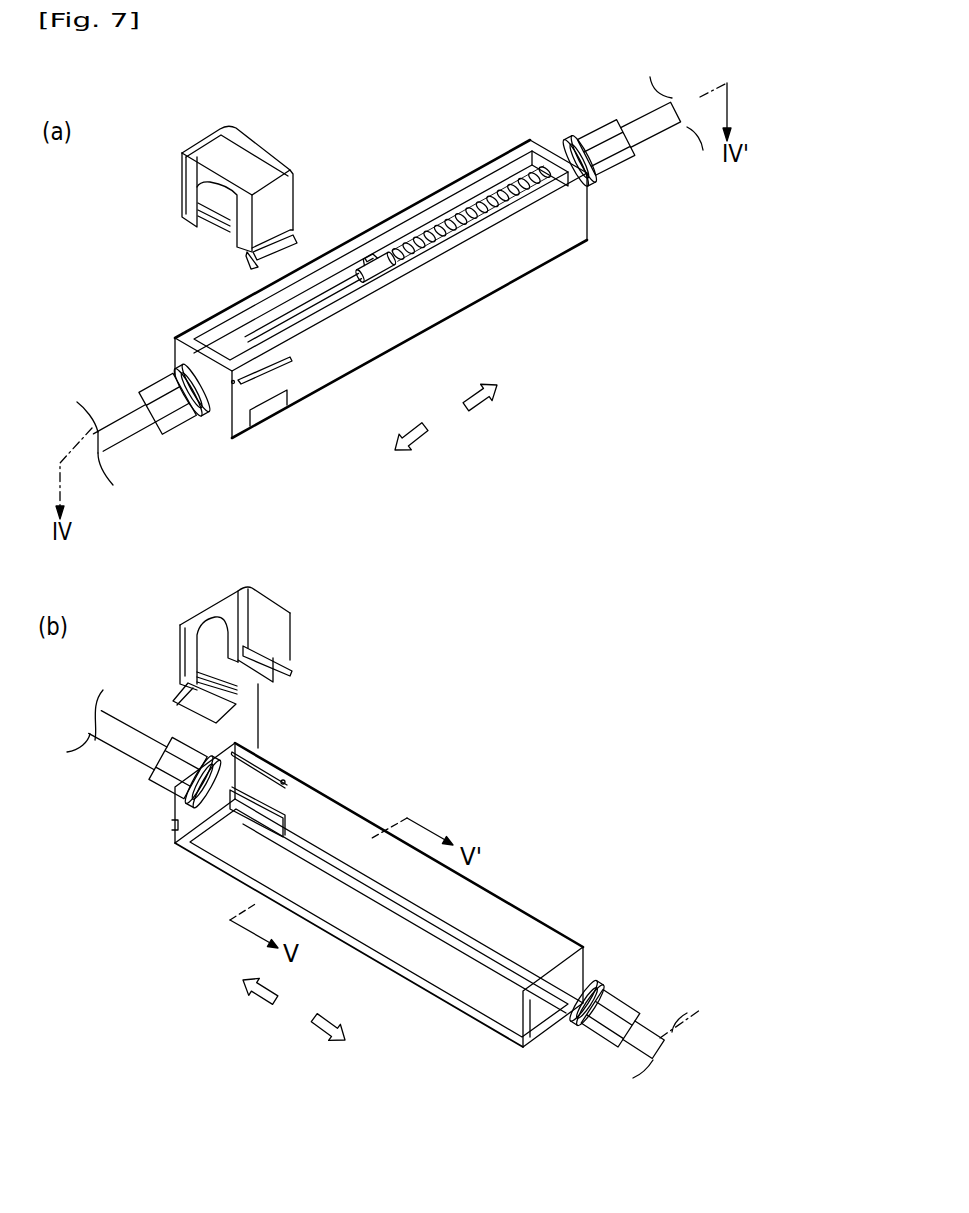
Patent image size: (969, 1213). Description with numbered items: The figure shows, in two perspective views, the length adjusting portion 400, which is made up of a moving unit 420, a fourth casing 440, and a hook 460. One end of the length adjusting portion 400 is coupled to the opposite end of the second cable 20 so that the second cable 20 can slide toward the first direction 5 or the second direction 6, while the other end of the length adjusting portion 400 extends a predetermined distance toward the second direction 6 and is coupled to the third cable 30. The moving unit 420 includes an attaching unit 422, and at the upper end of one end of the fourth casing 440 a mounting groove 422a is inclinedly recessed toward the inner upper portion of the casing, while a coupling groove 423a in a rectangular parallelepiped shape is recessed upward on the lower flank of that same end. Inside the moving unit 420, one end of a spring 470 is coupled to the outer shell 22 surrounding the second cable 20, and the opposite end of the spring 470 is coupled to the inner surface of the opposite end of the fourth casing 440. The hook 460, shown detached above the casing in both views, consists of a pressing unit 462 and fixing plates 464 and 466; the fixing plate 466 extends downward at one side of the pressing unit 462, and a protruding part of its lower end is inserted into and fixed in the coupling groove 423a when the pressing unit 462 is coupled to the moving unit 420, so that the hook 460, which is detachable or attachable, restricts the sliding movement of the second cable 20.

The length adjusting portion 400 is at (345, 148).
The moving unit 420 is at (307, 500).
The attaching unit 422 is at (282, 325).
The mounting groove 422a is at (233, 430).
The coupling groove 423a is at (260, 416).
The fourth casing 440 is at (423, 220).
The spring 470 is at (492, 195).
The hook 460 is at (100, 186).
The pressing unit 462 is at (205, 182).
The fixing plate 464 is at (181, 216).
The fixing plate 466 is at (247, 253).
The second cable 20 is at (173, 519).
The outer shell 22 is at (118, 430).
The third cable 30 is at (650, 128).
The first direction 5 is at (329, 714).
The second direction 6 is at (412, 720).